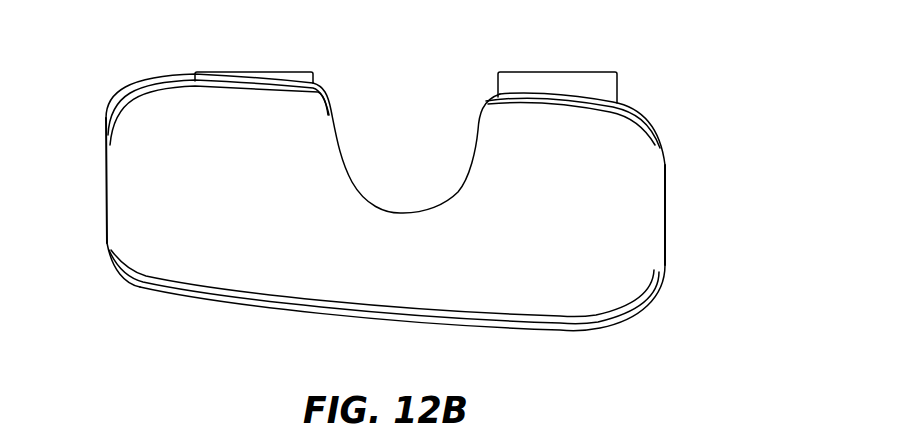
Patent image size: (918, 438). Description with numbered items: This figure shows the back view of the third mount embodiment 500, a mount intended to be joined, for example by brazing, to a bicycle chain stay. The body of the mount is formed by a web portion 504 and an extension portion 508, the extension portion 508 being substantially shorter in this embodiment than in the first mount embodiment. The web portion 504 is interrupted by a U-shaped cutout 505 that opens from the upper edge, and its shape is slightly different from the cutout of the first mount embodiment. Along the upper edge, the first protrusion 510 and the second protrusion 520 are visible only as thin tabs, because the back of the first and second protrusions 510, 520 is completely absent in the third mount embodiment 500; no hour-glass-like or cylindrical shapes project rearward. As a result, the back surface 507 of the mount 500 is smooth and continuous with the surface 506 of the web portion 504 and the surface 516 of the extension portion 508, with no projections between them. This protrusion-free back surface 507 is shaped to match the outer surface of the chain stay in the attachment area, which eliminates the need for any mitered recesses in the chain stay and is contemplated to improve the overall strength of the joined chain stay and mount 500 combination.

The third mount embodiment 500 is at (674, 111).
The web portion 504 is at (438, 328).
The U-shaped cutout 505 is at (344, 166).
The surface of the web portion 506 is at (394, 274).
The back surface 507 is at (641, 219).
The extension portion 508 is at (124, 285).
The first protrusion 510 is at (621, 75).
The surface of the extension portion 516 is at (142, 190).
The second protrusion 520 is at (318, 79).